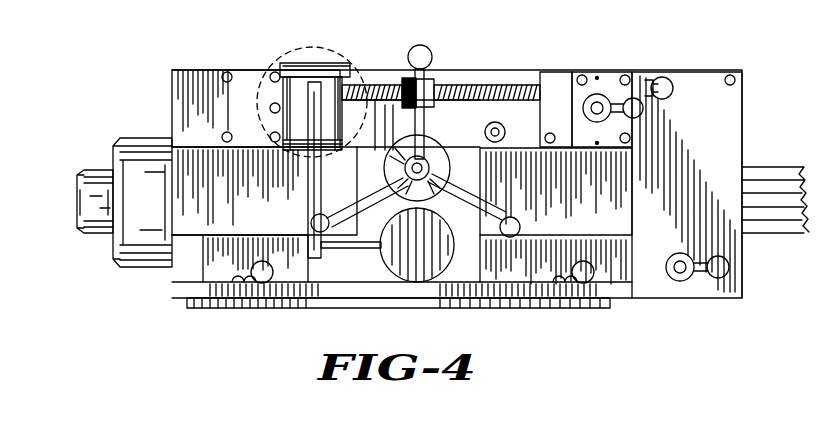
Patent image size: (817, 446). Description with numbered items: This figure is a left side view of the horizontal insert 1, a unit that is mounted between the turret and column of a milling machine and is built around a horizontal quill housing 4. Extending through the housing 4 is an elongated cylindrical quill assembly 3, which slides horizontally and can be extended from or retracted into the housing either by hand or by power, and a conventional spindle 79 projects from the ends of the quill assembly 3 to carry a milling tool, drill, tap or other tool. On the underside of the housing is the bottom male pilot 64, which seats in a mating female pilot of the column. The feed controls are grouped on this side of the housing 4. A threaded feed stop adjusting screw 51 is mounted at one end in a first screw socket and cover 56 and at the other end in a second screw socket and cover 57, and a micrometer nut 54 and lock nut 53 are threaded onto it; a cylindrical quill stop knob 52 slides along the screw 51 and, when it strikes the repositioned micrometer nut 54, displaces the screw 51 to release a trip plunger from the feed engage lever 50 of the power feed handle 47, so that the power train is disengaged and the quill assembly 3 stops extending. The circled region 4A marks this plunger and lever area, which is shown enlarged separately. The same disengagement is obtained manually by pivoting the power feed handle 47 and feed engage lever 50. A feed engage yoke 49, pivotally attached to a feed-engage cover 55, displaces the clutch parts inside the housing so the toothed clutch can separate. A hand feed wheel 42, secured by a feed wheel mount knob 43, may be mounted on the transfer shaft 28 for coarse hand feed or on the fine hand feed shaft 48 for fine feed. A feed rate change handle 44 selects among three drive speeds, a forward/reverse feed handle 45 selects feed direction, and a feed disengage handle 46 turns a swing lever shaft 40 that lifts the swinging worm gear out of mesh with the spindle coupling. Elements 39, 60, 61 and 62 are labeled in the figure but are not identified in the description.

The horizontal insert 1 is at (750, 62).
The quill assembly 3 is at (152, 134).
The horizontal quill housing 4 is at (166, 284).
The detail view region 4A is at (271, 65).
The transfer shaft 28 is at (432, 150).
The feet 39 is at (262, 284).
The swing lever shaft 40 is at (680, 283).
The hand feed wheel 42 is at (308, 162).
The feed wheel mount knob 43 is at (311, 221).
The feed rate change handle 44 is at (626, 100).
The forward/reverse feed handle 45 is at (672, 78).
The feed disengage handle 46 is at (712, 178).
The power feed handle 47 is at (313, 63).
The fine hand feed shaft 48 is at (494, 142).
The feed engage yoke 49 is at (343, 250).
The feed engage lever 50 is at (306, 190).
The feed stop adjusting screw 51 is at (483, 86).
The quill stop knob 52 is at (430, 67).
The lock nut 53 is at (392, 88).
The micrometer nut 54 is at (405, 77).
The feed-engage cover 55 is at (432, 282).
The first screw socket and cover 56 is at (302, 108).
The second screw socket and cover 57 is at (556, 82).
The end block 60 is at (197, 70).
The side panel 61 is at (727, 116).
The base plate 62 is at (463, 296).
The bottom male pilot 64 is at (520, 300).
The spindle 79 is at (97, 165).